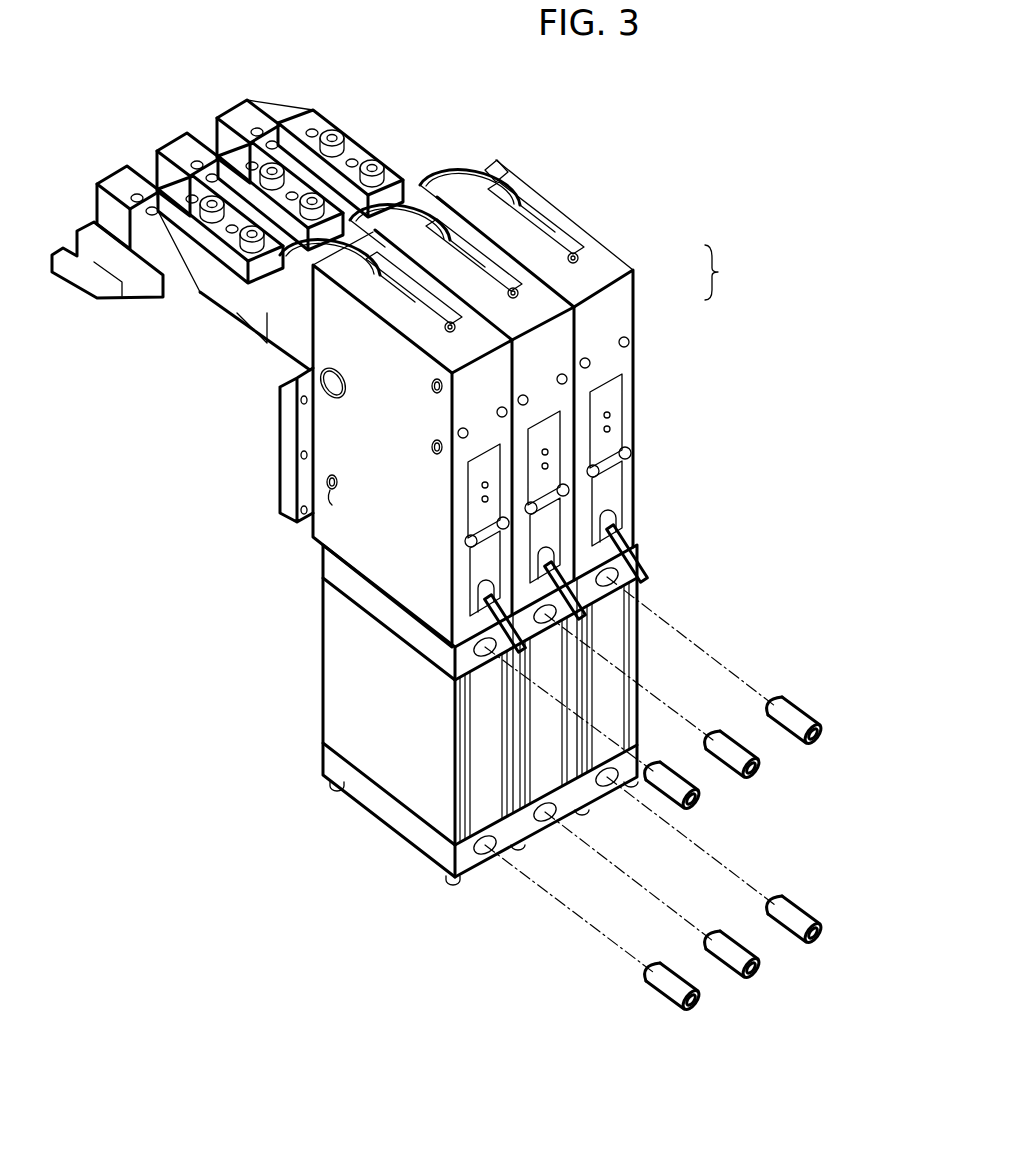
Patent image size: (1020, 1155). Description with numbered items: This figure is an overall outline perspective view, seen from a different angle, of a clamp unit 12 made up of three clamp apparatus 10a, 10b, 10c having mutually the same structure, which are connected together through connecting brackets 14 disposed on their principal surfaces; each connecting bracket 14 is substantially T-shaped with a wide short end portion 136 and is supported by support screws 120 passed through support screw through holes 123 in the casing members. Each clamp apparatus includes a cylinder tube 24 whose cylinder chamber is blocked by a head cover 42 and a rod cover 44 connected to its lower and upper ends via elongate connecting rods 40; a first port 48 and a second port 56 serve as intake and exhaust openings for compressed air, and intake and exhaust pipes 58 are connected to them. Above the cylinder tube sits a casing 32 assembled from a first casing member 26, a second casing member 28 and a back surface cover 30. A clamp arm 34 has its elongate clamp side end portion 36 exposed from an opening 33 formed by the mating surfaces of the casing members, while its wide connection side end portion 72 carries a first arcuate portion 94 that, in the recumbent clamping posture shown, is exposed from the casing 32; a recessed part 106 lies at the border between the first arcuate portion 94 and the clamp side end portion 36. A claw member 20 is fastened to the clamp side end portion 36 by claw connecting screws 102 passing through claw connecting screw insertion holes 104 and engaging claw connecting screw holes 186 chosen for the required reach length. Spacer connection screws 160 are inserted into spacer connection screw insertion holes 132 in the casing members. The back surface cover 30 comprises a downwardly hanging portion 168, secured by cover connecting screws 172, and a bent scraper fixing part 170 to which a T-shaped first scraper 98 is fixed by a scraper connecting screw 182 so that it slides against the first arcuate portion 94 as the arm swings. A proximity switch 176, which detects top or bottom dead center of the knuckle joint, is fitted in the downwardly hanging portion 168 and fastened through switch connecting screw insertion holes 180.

The clamp unit 12 is at (679, 113).
The connecting bracket 14 is at (280, 482).
The claw member 20 is at (197, 147).
The cylinder tube 24 is at (633, 669).
The first casing member 26 is at (497, 200).
The second casing member 28 is at (453, 192).
The back surface cover 30 is at (565, 404).
The casing 32 is at (485, 154).
The opening 33 is at (350, 283).
The clamp arm 34 is at (400, 167).
The clamp side end portion 36 is at (187, 142).
The connecting rod 40 is at (335, 793).
The head cover 42 is at (635, 752).
The rod cover 44 is at (325, 567).
The first port 48 is at (497, 852).
The second port 56 is at (620, 577).
The intake and exhaust pipe 58 is at (693, 809).
The connection side end portion 72 is at (283, 333).
The first arcuate portion 94 is at (300, 260).
The first scraper 98 is at (410, 258).
The claw connecting screw 102 is at (380, 166).
The claw connecting screw insertion hole 104 is at (307, 128).
The recessed part 106 is at (240, 315).
The support screw 120 is at (336, 473).
The support screw through hole 123 is at (333, 493).
The spacer connection screw insertion hole 132 is at (440, 395).
The wide short end portion 136 is at (287, 522).
The spacer connection screw 160 is at (432, 383).
The downwardly hanging portion 168 is at (630, 288).
The scraper fixing part 170 is at (617, 260).
The cover connecting screw 172 is at (465, 431).
The proximity switch 176 is at (620, 413).
The switch connecting screw insertion hole 180 is at (632, 455).
The scraper connecting screw 182 is at (576, 252).
The claw connecting screw hole 186 is at (153, 209).
The clamp apparatus 10a is at (608, 252).
The clamp apparatus 10b is at (510, 270).
The clamp apparatus 10c is at (325, 539).